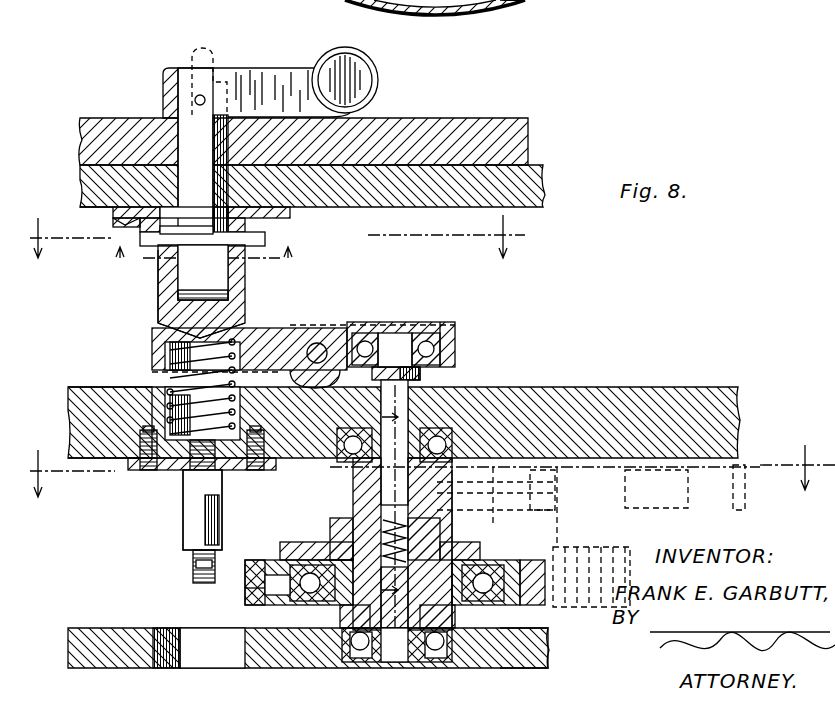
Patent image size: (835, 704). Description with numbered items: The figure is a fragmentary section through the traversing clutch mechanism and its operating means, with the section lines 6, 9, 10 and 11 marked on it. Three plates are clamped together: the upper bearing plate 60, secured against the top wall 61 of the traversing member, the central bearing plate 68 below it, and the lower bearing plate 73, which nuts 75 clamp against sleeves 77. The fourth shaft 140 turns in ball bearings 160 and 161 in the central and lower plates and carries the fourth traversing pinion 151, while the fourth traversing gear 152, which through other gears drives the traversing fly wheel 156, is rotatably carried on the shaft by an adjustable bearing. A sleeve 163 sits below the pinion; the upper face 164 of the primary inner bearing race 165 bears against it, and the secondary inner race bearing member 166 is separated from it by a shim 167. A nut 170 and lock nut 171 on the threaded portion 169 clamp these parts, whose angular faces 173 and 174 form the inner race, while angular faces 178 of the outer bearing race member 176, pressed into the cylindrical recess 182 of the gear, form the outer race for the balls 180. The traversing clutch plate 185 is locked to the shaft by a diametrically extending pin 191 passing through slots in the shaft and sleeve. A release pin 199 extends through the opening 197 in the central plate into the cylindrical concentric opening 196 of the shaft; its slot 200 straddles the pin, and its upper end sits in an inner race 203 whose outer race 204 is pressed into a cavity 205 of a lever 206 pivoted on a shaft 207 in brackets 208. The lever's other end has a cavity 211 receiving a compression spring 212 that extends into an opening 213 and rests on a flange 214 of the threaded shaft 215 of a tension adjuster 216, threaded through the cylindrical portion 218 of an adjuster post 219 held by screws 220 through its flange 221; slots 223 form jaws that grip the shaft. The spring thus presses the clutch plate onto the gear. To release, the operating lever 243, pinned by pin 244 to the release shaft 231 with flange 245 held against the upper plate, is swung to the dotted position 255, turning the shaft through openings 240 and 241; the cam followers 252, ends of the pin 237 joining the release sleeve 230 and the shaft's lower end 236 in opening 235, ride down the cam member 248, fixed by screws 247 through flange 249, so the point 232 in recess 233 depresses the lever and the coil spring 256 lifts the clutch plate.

The section line 6- 6 is at (432, 460).
The section line 9- 9 is at (393, 512).
The section line 10- 10 is at (208, 262).
The section line 11- 11 is at (293, 226).
The upper bearing plate 60 is at (530, 182).
The top wall 61 is at (494, 128).
The central bearing plate 68 is at (647, 398).
The lower bearing plate 73 is at (548, 648).
The nuts 75 is at (546, 648).
The sleeves 77 is at (358, 4).
The fourth shaft 140 is at (367, 487).
The fourth traversing pinion 151 is at (505, 496).
The fourth traversing gear 152 is at (240, 574).
The traversing fly wheel 156 is at (524, 2).
The ball bearing 160 is at (447, 432).
The ball bearing 161 is at (462, 666).
The sleeve 163 is at (490, 504).
The upper face 164 is at (460, 546).
The primary inner bearing race 165 is at (485, 552).
The secondary inner race bearing member 166 is at (310, 597).
The shim 167 is at (325, 560).
The threaded portion 169 is at (442, 610).
The nut 170 is at (330, 611).
The lock nut 171 is at (345, 621).
The angular face 173 is at (548, 549).
The angular face 174 is at (247, 598).
The outer bearing race member 176 is at (548, 600).
The angular faces 178 is at (285, 560).
The balls 180 is at (242, 589).
The cylindrical recess 182 is at (196, 570).
The traversing clutch plate 185 is at (540, 536).
The diametrically extending pin 191 is at (393, 528).
The cylindrical concentric opening 196 is at (490, 488).
The co-extensive opening 197 is at (410, 400).
The release pin 199 is at (402, 423).
The slot 200 is at (555, 479).
The inner race 203 is at (420, 333).
The outer race 204 is at (437, 323).
The cavity 205 is at (453, 340).
The lever 206 is at (342, 325).
The shaft 207 is at (318, 344).
The brackets 208 is at (303, 372).
The downwardly opening cavity 211 is at (165, 357).
The compression spring 212 is at (152, 348).
The cylindrical opening 213 is at (165, 386).
The flange 214 is at (82, 415).
The threaded shaft 215 is at (178, 496).
The tension adjuster 216 is at (188, 507).
The cylindrical portion 218 is at (200, 517).
The adjuster post 219 is at (228, 470).
The screws 220 is at (147, 450).
The flange 221 is at (145, 470).
The slots 223 is at (190, 575).
The release sleeve 230 is at (165, 282).
The release shaft 231 is at (285, 104).
The point 232 is at (243, 305).
The recess 233 is at (160, 326).
The cylindrical opening 235 is at (245, 237).
The lower end 236 is at (152, 262).
The pin 237 is at (262, 213).
The opening 240 is at (178, 175).
The opening 241 is at (203, 150).
The operating lever 243 is at (272, 75).
The pin 244 is at (205, 97).
The flange 245 is at (113, 207).
The screws 247 is at (145, 236).
The cam member 248 is at (116, 213).
The flange 249 is at (120, 213).
The cam followers 252 is at (140, 232).
The dotted lines 255 is at (190, 48).
The coil spring 256 is at (382, 622).